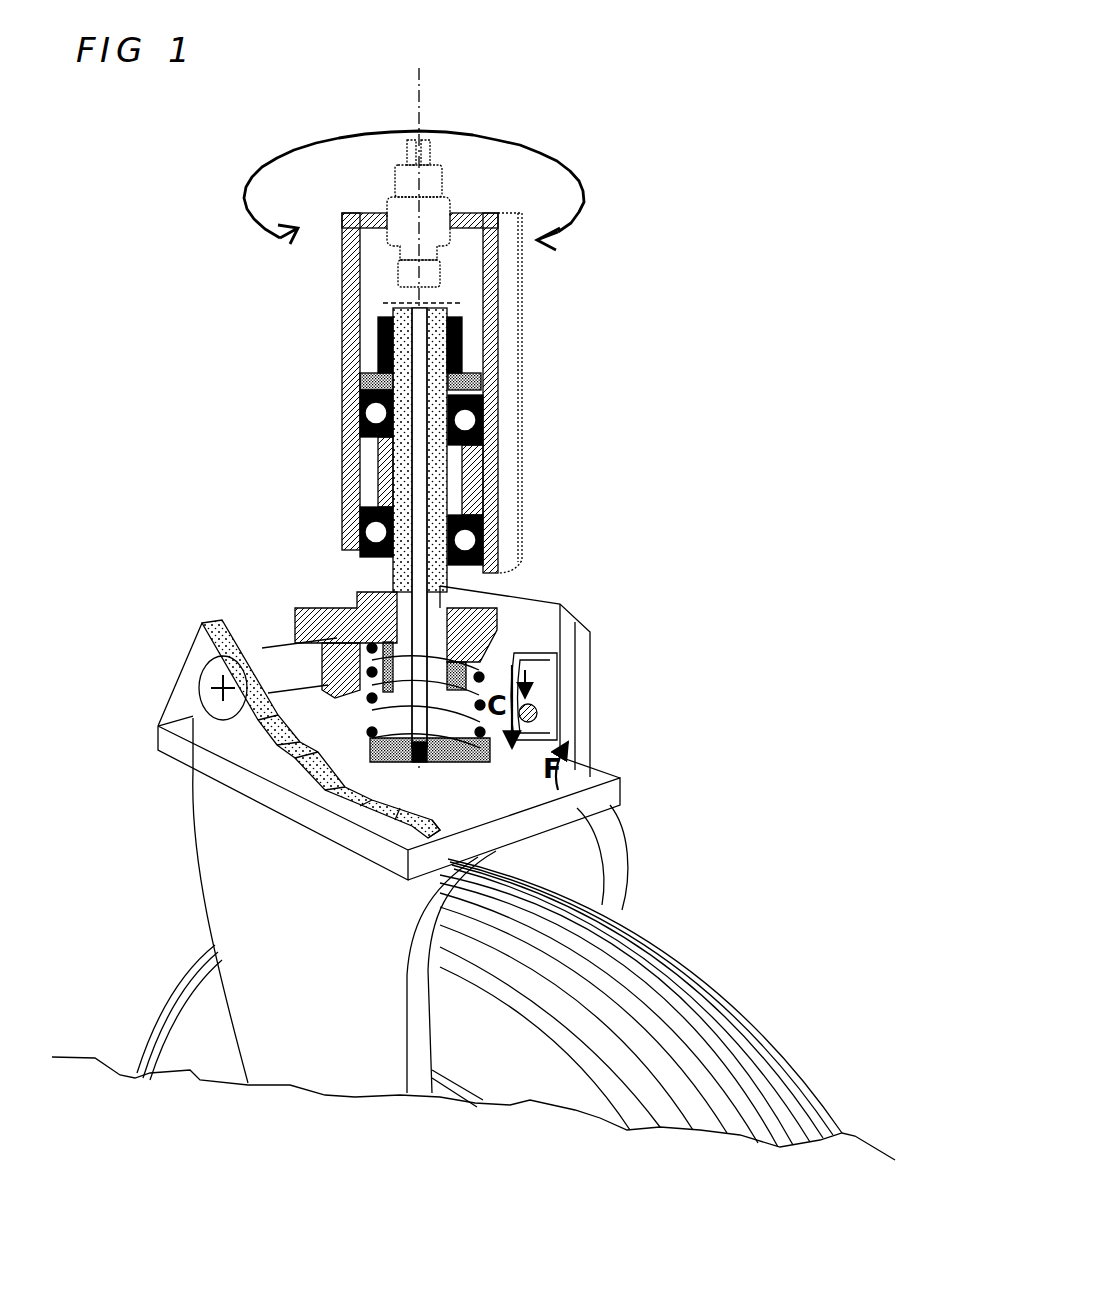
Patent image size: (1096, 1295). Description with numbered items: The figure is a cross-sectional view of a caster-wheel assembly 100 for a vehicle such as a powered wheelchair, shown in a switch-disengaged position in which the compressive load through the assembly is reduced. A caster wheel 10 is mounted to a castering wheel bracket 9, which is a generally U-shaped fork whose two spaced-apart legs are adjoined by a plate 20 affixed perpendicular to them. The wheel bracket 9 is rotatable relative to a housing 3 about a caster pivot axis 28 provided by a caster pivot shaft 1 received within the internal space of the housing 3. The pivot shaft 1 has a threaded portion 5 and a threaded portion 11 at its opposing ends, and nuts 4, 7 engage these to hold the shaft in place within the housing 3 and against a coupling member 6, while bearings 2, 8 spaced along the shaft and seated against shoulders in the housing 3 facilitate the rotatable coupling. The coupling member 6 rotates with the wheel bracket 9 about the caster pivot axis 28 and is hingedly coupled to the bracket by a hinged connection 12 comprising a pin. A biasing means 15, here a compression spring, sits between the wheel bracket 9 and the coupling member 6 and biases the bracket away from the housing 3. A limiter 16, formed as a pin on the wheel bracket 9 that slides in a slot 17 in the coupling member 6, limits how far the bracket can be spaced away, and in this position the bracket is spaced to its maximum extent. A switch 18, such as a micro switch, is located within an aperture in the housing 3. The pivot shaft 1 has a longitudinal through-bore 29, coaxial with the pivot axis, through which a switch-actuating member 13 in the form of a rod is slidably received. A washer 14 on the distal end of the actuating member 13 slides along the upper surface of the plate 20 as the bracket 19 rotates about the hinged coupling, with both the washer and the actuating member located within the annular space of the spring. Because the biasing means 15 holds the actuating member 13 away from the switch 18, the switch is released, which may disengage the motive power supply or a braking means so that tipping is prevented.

The caster pivot shaft 1 is at (438, 478).
The bearing 2 is at (374, 413).
The housing 3 is at (455, 216).
The nut 4 is at (462, 357).
The threaded portion 5 is at (395, 320).
The coupling member 6 is at (337, 610).
The nut 7 is at (455, 670).
The bearing 8 is at (375, 532).
The castering wheel bracket 9 is at (205, 845).
The caster wheel 10 is at (640, 962).
The threaded portion 11 is at (380, 648).
The hinged connection 12 is at (212, 688).
The switch-actuating member 13 is at (418, 512).
The washer 14 is at (463, 745).
The biasing means 15 is at (368, 695).
The limiter 16 is at (523, 715).
The slot 17 is at (537, 688).
The switch 18 is at (410, 196).
The bracket 19 is at (432, 278).
The plate 20 is at (422, 772).
The caster pivot axis 28 is at (421, 84).
The longitudinal through-bore 29 is at (412, 318).
The caster-wheel assembly 100 is at (608, 130).